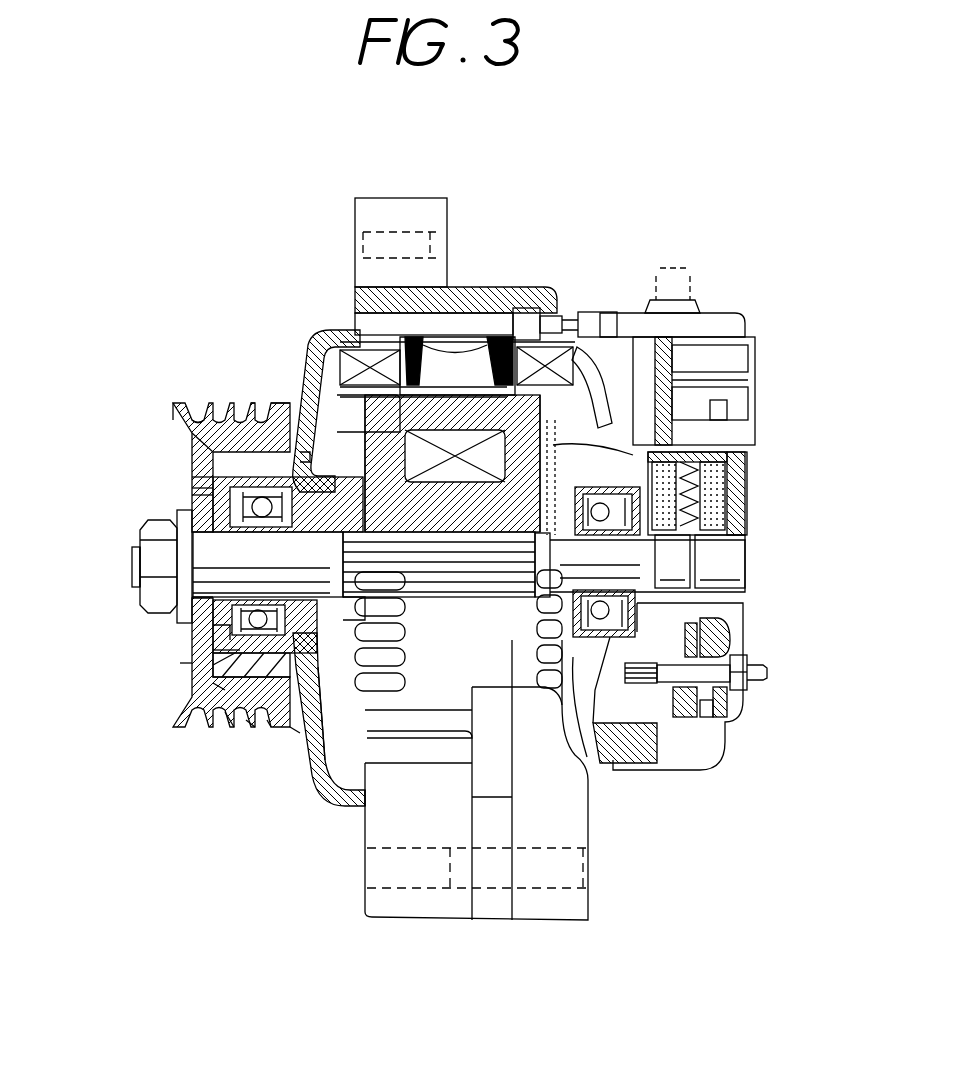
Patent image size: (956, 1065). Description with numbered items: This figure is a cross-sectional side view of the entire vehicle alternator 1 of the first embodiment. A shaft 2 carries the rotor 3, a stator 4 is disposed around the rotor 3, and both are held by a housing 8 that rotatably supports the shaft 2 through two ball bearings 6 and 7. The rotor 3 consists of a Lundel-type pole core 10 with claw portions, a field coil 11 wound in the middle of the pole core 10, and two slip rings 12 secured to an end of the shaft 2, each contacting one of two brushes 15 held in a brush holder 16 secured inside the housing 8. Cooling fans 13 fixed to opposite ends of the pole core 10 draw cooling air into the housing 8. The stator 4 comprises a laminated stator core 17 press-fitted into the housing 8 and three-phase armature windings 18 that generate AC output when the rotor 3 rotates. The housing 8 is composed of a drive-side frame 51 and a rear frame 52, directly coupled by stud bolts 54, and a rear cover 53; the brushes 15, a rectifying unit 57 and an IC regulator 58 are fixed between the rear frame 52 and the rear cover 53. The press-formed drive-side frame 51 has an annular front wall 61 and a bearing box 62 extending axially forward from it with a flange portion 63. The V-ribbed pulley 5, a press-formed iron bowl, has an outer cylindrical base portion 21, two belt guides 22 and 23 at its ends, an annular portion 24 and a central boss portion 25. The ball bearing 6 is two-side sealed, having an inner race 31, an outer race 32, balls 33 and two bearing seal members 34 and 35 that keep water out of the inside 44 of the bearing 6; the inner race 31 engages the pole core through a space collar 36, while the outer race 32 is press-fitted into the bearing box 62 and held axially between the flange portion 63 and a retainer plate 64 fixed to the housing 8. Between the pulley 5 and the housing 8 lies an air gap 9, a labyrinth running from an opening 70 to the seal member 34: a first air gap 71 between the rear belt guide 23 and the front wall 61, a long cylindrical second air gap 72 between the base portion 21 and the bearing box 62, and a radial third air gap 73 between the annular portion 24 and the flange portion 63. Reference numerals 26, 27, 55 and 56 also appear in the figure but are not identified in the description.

The vehicle alternator 1 is at (700, 262).
The shaft 2 is at (153, 585).
The rotor 3 is at (323, 380).
The stator 4 is at (690, 400).
The V-ribbed pulley 5 is at (167, 395).
The ball bearing 6 is at (213, 640).
The ball bearing 7 is at (707, 610).
The housing 8 is at (602, 250).
The air gap 9 is at (197, 453).
The Lundel-type pole core 10 is at (455, 440).
The field coil 11 is at (492, 395).
The slip rings 12 is at (667, 552).
The cooling fans 13 is at (350, 405).
The brushes 15 is at (745, 500).
The brush holder 16 is at (747, 487).
The stator core 17 is at (455, 385).
The three-phase armature windings 18 is at (577, 340).
The outer cylindrical base portion 21 is at (252, 410).
The belt guide 22 is at (177, 403).
The belt guide 23 is at (287, 403).
The annular portion 24 is at (195, 477).
The boss portion 25 is at (197, 497).
The pulley groove 26 is at (200, 418).
The shaft end 27 is at (153, 550).
The inner race 31 is at (200, 510).
The outer race 32 is at (310, 457).
The balls 33 is at (190, 452).
The bearing seal member 34 is at (197, 490).
The bearing seal member 35 is at (292, 505).
The space collar 36 is at (328, 607).
The inside of the bearing 44 is at (187, 600).
The drive-side frame 51 is at (312, 780).
The rear frame 52 is at (600, 355).
The rear cover 53 is at (740, 315).
The stud bolts 54 is at (393, 318).
The mounting foot 55 is at (365, 812).
The lower bracket boss 56 is at (590, 772).
The rectifying unit 57 is at (730, 717).
The IC regulator 58 is at (705, 375).
The annular front wall 61 is at (297, 733).
The bearing box 62 is at (213, 683).
The flange portion 63 is at (193, 625).
The retainer plate 64 is at (230, 727).
The opening 70 is at (277, 727).
The first air gap 71 is at (257, 720).
The second air gap 72 is at (180, 663).
The third air gap 73 is at (190, 642).